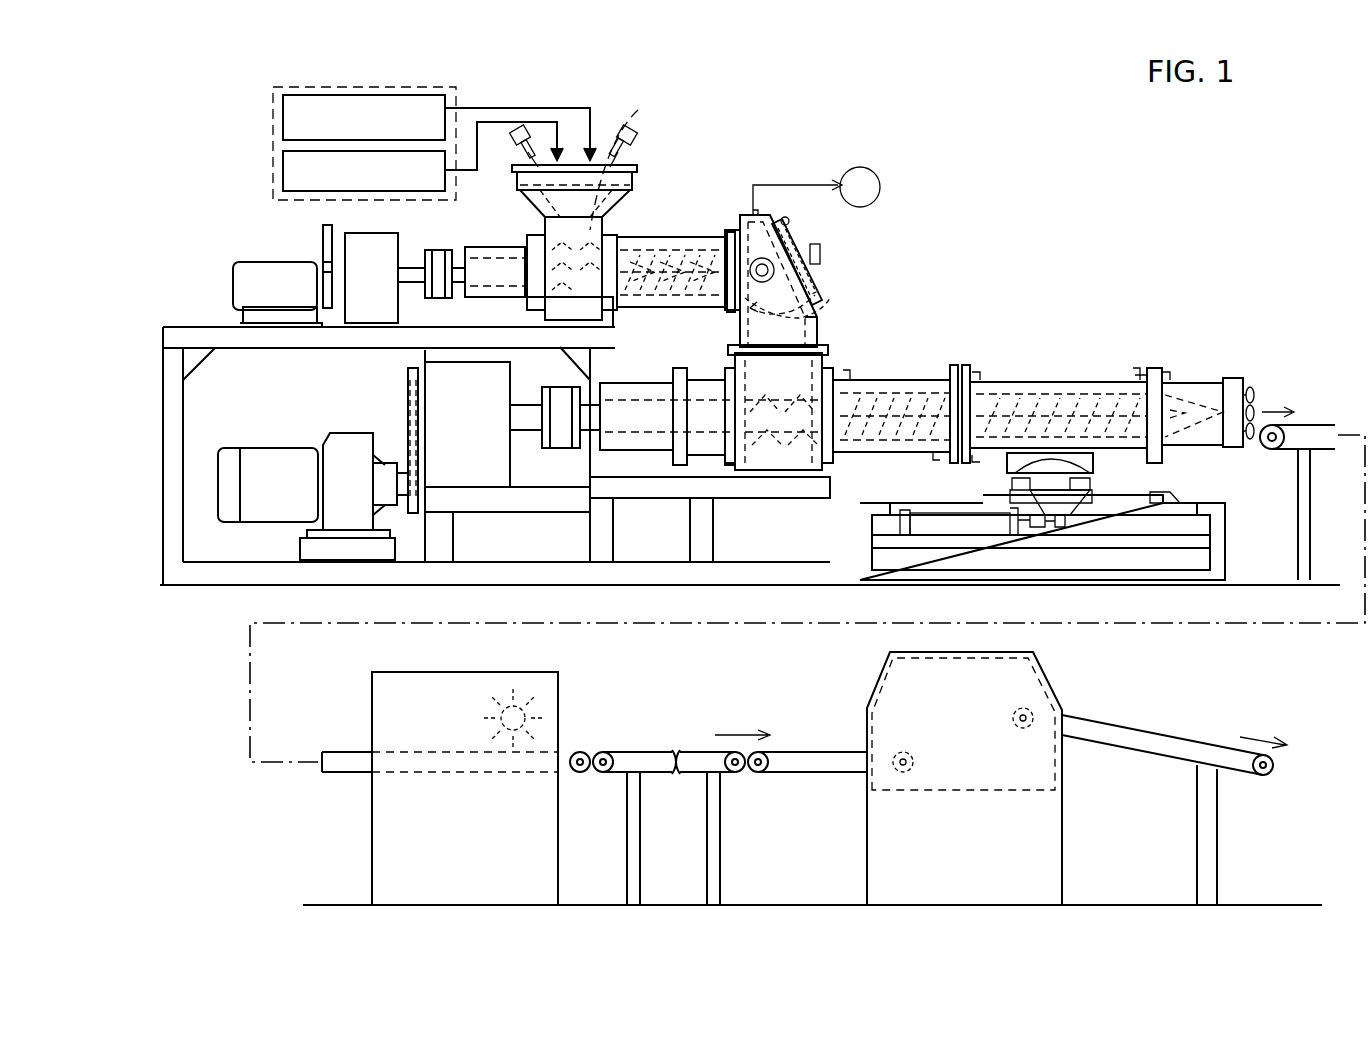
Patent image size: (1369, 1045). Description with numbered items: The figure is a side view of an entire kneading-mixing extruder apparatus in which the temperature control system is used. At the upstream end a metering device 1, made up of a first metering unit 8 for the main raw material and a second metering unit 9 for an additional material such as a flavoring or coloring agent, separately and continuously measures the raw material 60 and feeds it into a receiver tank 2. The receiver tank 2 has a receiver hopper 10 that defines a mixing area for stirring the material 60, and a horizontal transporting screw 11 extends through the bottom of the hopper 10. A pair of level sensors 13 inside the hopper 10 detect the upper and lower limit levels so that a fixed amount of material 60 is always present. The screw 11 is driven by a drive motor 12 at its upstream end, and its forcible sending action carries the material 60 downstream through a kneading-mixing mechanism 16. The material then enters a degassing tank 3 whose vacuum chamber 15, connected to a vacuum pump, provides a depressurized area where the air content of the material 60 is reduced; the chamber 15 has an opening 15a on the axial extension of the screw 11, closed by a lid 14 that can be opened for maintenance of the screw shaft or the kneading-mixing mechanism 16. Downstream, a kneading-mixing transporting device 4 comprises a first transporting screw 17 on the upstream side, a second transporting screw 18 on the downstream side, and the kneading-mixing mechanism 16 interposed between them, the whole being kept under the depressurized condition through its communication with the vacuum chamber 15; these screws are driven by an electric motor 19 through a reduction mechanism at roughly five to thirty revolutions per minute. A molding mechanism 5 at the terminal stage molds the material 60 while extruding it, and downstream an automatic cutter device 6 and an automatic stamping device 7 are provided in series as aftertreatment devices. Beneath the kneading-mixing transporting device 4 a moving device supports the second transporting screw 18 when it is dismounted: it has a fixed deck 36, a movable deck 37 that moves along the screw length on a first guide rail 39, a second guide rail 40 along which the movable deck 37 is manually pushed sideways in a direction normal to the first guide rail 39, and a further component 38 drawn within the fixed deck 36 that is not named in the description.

The metering device 1 is at (265, 113).
The receiver tank 2 is at (637, 180).
The degassing tank 3 is at (775, 215).
The kneading-mixing transporting device 4 is at (1010, 345).
The molding mechanism 5 is at (1190, 376).
The automatic cutter device 6 is at (545, 672).
The automatic stamping device 7 is at (1050, 683).
The first metering unit 8 is at (283, 128).
The second metering unit 9 is at (283, 175).
The receiver hopper 10 is at (620, 207).
The horizontal transporting screw 11 is at (688, 240).
The drive motor 12 is at (250, 262).
The level sensors 13 is at (515, 145).
The lid 14 is at (820, 253).
The vacuum chamber 15 is at (797, 335).
The opening 15a is at (822, 292).
The kneading-mixing mechanism 16 is at (826, 313).
The first transporting screw 17 is at (897, 378).
The second transporting screw 18 is at (1040, 395).
The electric motor 19 is at (272, 455).
The fixed deck 36 is at (880, 506).
The movable deck 37 is at (1010, 470).
The cylinder 38 is at (943, 523).
The first guide rail 39 is at (1170, 496).
The second guide rail 40 is at (1092, 470).
The raw material 60 is at (631, 157).